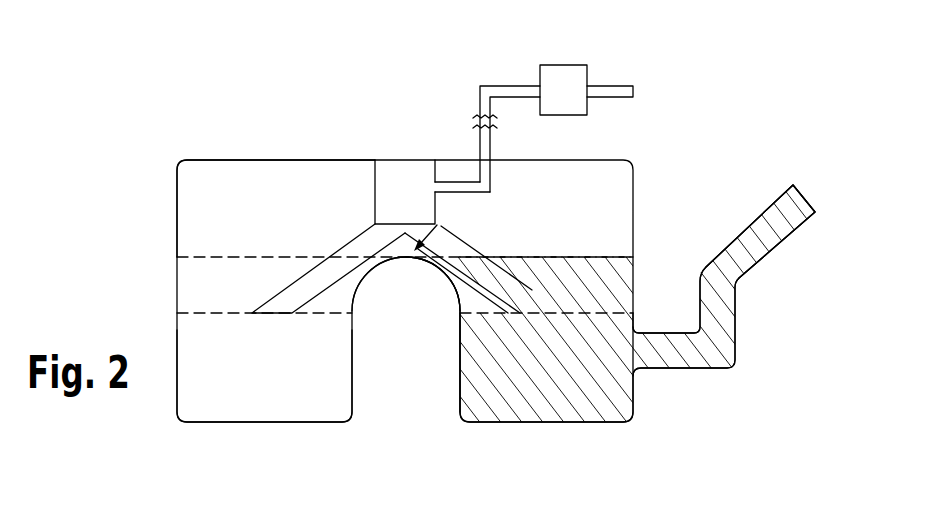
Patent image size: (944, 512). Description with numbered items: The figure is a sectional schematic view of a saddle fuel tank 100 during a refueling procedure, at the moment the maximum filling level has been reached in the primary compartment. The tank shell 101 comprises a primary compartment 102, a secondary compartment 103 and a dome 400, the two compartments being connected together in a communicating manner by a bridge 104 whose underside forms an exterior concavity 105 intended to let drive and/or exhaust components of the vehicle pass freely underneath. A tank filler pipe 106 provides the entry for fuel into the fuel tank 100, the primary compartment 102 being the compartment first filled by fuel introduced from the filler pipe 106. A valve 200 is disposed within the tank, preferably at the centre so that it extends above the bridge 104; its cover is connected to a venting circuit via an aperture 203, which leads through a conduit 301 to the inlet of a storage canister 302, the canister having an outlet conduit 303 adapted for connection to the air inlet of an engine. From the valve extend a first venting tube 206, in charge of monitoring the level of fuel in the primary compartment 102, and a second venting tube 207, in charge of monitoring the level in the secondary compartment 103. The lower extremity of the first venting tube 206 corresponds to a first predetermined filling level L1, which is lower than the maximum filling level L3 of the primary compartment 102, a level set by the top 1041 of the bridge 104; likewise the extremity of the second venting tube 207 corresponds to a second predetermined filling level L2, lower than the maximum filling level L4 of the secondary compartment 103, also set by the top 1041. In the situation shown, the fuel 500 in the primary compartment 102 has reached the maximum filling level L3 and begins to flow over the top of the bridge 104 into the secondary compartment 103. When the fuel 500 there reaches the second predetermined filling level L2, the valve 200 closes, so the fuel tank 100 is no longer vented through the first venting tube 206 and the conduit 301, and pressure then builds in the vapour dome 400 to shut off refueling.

The saddle fuel tank 100 is at (673, 148).
The tank shell 101 is at (205, 160).
The primary compartment 102 is at (550, 410).
The secondary compartment 103 is at (261, 408).
The bridge 104 is at (441, 298).
The exterior concavity 105 is at (406, 286).
The tank filler pipe 106 is at (781, 258).
The valve 200 is at (393, 182).
The aperture 203 is at (436, 187).
The first venting tube 206 is at (513, 296).
The second venting tube 207 is at (327, 271).
The conduit 301 is at (490, 182).
The storage canister 302 is at (553, 72).
The outlet conduit 303 is at (612, 90).
The dome 400 is at (289, 172).
The fuel 500 is at (665, 352).
The top of the bridge 1041 is at (440, 226).
The first predetermined filling level L1 is at (586, 313).
The second predetermined filling level L2 is at (213, 313).
The maximum filling level of the primary compartment L3 is at (594, 257).
The maximum filling level of the secondary compartment L4 is at (213, 257).